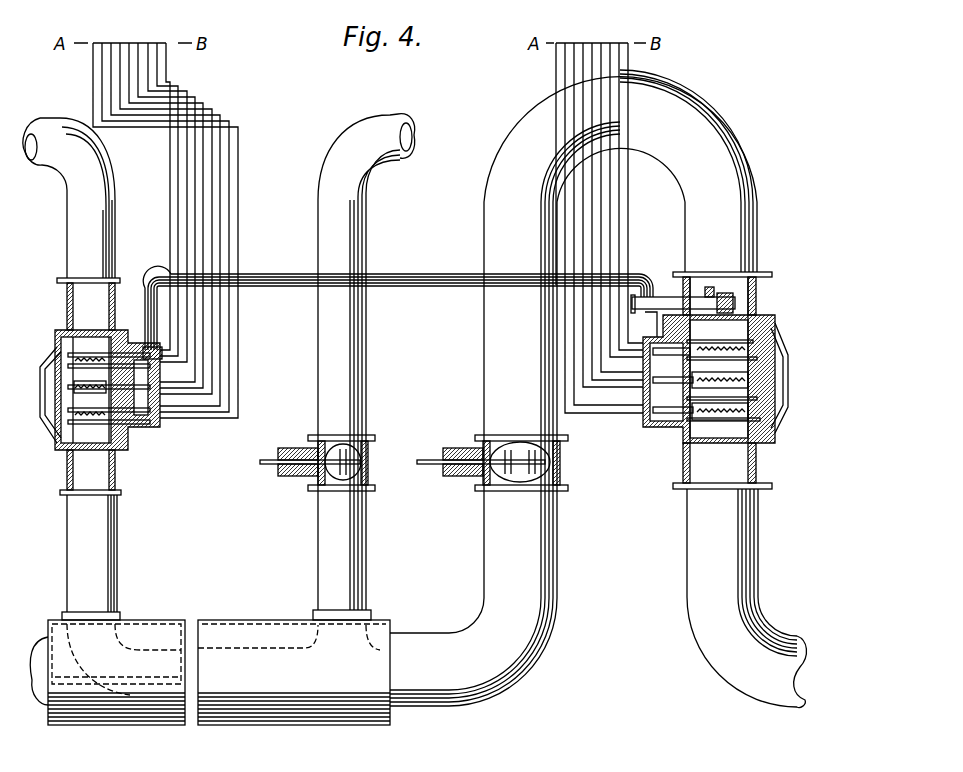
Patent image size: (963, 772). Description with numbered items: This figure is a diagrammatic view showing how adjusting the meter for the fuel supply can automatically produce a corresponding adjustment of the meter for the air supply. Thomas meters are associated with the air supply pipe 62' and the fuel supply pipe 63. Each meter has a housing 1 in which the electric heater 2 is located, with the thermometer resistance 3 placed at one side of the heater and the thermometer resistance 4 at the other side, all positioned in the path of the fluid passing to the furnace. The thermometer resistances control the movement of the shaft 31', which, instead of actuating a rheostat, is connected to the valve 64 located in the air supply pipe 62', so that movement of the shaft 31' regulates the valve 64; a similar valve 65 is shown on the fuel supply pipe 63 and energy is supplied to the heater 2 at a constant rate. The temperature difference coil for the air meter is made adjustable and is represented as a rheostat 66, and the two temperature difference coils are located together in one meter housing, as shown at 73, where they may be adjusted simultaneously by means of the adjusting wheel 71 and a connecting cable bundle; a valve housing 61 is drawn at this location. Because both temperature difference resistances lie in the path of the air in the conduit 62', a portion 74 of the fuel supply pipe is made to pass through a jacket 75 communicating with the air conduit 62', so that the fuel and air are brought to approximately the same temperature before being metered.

The housing 1 is at (118, 473).
The electric heater 2 is at (73, 390).
The thermometer resistance 3 is at (73, 427).
The thermometer resistance 4 is at (67, 358).
The shaft 31' is at (400, 448).
The valve housing 61 is at (722, 293).
The air supply pipe 62' is at (573, 388).
The fuel supply pipe 63 is at (366, 546).
The valve 64 is at (557, 440).
The butterfly valve 65 is at (348, 440).
The rheostat 66 is at (737, 300).
The adjusting wheel 71 is at (646, 285).
The meter housing location of temperature difference coils 73 is at (713, 292).
The portion of the fuel supply pipe 74 is at (142, 650).
The jacket 75 is at (250, 620).